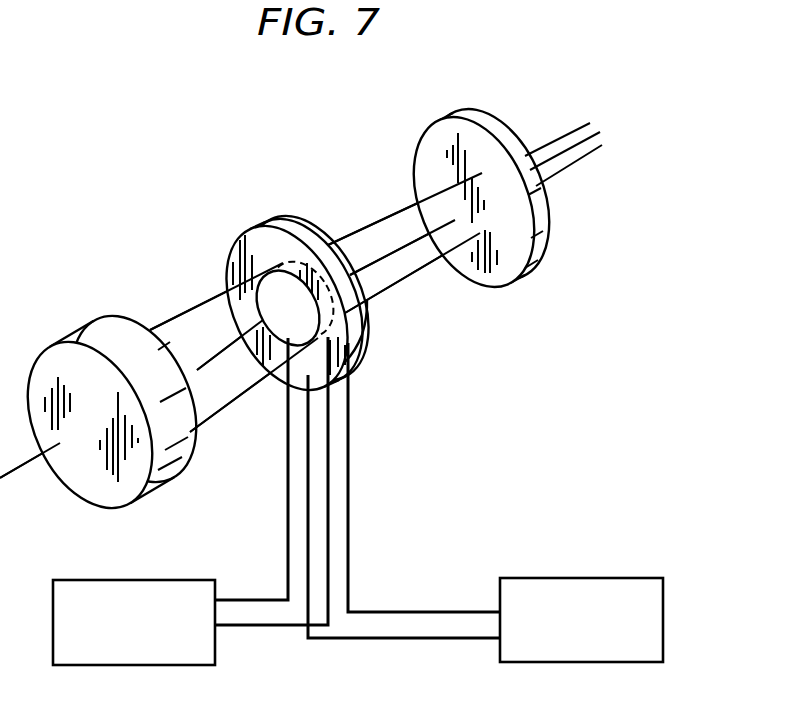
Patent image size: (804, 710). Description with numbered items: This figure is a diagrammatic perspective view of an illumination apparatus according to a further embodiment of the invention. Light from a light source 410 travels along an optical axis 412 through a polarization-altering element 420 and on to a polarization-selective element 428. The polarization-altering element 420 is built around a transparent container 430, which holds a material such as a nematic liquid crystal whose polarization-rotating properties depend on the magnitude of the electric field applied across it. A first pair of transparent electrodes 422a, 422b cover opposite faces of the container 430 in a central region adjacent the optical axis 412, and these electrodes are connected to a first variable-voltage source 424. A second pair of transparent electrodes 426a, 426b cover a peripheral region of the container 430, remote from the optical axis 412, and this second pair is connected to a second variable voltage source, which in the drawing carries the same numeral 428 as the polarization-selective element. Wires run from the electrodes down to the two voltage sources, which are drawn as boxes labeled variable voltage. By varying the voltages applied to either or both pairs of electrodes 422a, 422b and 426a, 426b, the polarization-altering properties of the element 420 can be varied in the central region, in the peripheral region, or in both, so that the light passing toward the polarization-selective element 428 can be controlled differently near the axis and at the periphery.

The light source 410 is at (72, 333).
The optical axis 412 is at (410, 237).
The polarization-altering element 420 is at (248, 232).
The first transparent electrode 422a is at (265, 303).
The first transparent electrode 422b is at (294, 258).
The first variable-voltage source 424 is at (158, 580).
The second transparent electrode 426a is at (357, 352).
The second transparent electrode 426b is at (365, 325).
The polarization-selective element 428 is at (487, 123).
The transparent container 430 is at (308, 238).